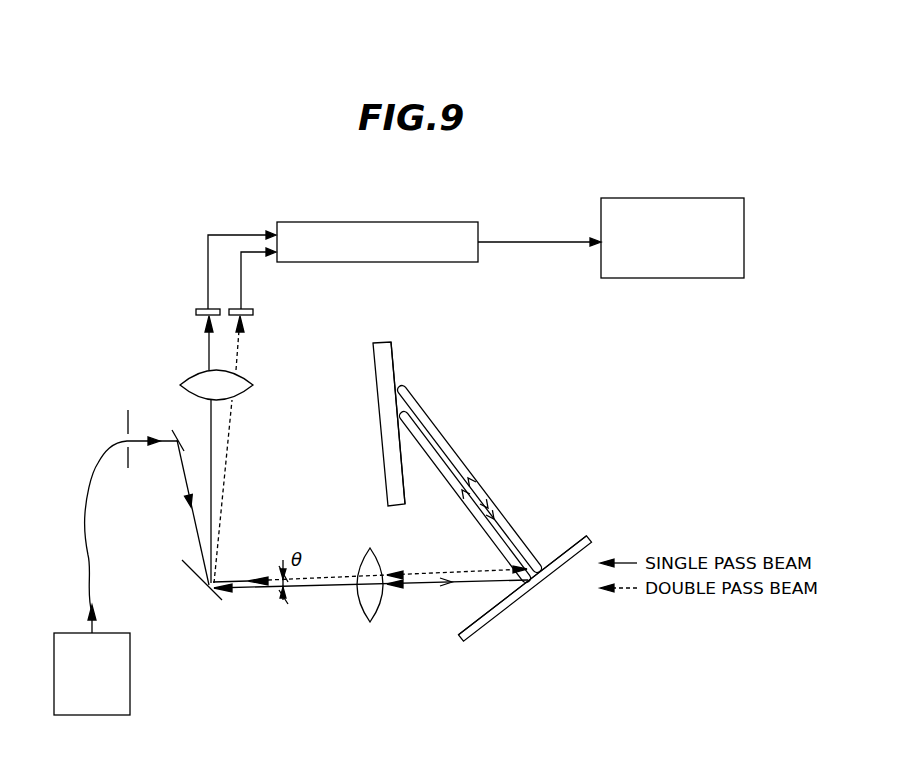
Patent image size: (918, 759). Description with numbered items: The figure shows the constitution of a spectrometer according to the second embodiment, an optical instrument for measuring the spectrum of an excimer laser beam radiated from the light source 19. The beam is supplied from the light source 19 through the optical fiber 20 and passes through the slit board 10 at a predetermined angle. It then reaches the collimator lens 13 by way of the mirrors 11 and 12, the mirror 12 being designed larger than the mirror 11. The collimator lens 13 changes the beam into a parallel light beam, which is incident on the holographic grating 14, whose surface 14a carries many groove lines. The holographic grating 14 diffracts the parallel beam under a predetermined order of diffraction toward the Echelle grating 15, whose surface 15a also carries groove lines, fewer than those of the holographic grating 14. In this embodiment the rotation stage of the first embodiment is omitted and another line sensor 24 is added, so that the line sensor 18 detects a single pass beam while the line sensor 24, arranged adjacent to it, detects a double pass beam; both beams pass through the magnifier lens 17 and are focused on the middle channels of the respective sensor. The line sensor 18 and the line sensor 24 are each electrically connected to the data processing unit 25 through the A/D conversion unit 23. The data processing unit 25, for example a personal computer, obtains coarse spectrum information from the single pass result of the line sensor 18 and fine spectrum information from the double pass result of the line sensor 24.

The slit board 10 is at (123, 413).
The mirror 11 is at (183, 428).
The mirror 12 is at (182, 565).
The collimator lens 13 is at (363, 608).
The holographic grating 14 is at (562, 561).
The surface of holographic grating 14a is at (587, 535).
The Echelle grating 15 is at (378, 445).
The surface of Echelle grating 15a is at (393, 355).
The magnifier lens 17 is at (202, 382).
The line sensor 18 is at (196, 312).
The light source 19 is at (130, 688).
The optical fiber 20 is at (86, 513).
The A/D conversion unit 23 is at (313, 222).
The line sensor 24 is at (253, 312).
The data processing unit 25 is at (704, 278).